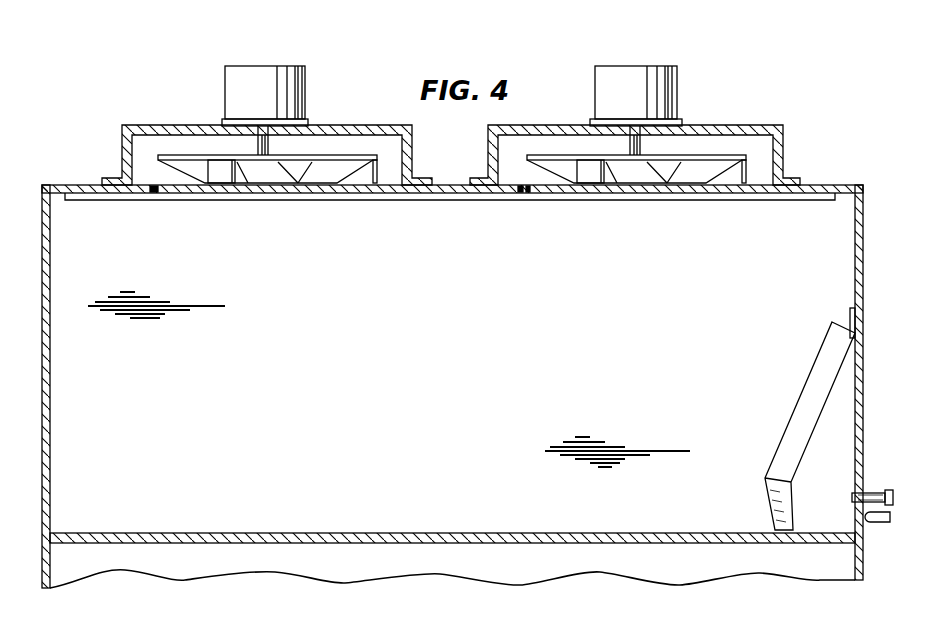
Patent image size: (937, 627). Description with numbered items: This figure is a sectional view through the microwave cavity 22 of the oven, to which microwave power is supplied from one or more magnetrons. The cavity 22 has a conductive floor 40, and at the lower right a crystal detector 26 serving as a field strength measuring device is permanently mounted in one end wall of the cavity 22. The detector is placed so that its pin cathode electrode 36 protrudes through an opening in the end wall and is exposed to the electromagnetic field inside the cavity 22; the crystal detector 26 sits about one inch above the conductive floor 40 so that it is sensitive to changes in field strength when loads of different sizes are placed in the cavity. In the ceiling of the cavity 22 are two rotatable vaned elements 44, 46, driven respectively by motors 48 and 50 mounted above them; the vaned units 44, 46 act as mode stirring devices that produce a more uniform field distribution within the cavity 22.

The microwave cavity 22 is at (525, 371).
The crystal detector 26 is at (884, 484).
The pin cathode electrode 36 is at (852, 497).
The conductive floor 40 is at (566, 534).
The rotatable vaned element 44 is at (343, 170).
The rotatable vaned element 46 is at (573, 168).
The motor 48 is at (293, 96).
The motor 50 is at (665, 96).